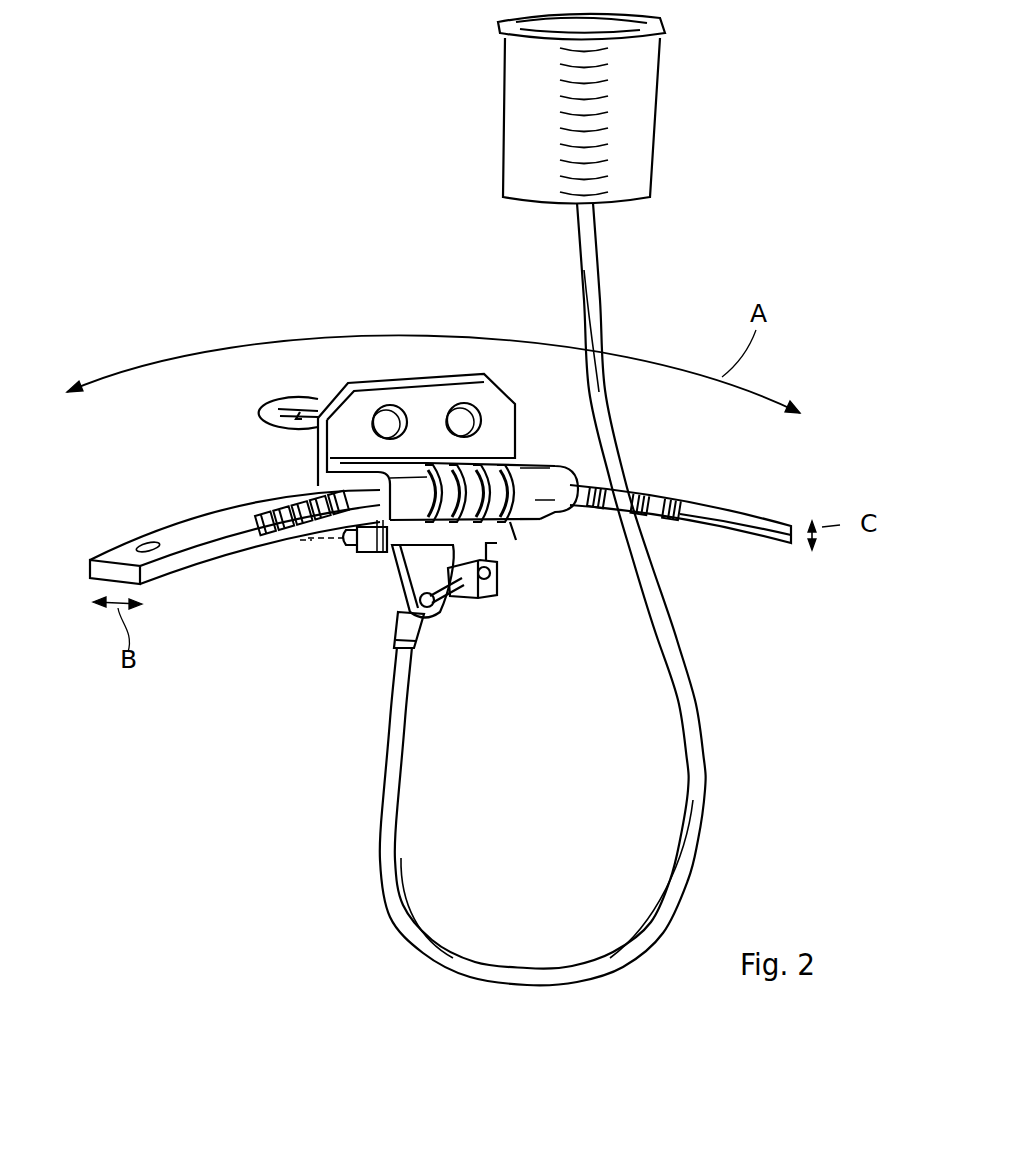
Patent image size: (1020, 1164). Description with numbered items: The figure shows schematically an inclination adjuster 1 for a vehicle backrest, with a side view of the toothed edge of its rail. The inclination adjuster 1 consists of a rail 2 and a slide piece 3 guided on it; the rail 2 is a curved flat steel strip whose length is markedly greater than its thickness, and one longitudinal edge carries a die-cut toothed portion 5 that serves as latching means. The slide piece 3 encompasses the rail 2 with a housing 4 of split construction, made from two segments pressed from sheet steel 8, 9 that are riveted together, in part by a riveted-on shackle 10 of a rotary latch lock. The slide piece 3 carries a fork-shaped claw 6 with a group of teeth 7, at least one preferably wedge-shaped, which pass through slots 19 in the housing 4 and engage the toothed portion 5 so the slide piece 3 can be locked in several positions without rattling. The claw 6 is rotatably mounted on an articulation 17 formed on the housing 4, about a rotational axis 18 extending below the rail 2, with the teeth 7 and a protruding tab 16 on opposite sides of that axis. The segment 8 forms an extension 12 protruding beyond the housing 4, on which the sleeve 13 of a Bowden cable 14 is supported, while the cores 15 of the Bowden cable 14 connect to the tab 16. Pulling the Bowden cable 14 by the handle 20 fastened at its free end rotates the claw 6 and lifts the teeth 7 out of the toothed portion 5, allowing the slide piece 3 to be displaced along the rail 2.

The inclination adjuster 1 is at (274, 292).
The rail 2 is at (122, 553).
The slide piece 3 is at (554, 475).
The housing 4 is at (543, 505).
The toothed portion 5 is at (278, 528).
The claw 6 is at (495, 535).
The teeth 7 is at (499, 533).
The segment pressed from sheet steel 8 is at (320, 450).
The segment pressed from sheet steel 9 is at (430, 387).
The shackle 10 is at (265, 408).
The extension 12 is at (412, 565).
The sleeve 13 is at (398, 757).
The Bowden cable 14 is at (420, 845).
The cores 15 is at (444, 616).
The tab 16 is at (482, 590).
The articulation 17 is at (350, 545).
The rotational axis 18 is at (322, 541).
The slots 19 is at (512, 470).
The handle 20 is at (640, 103).